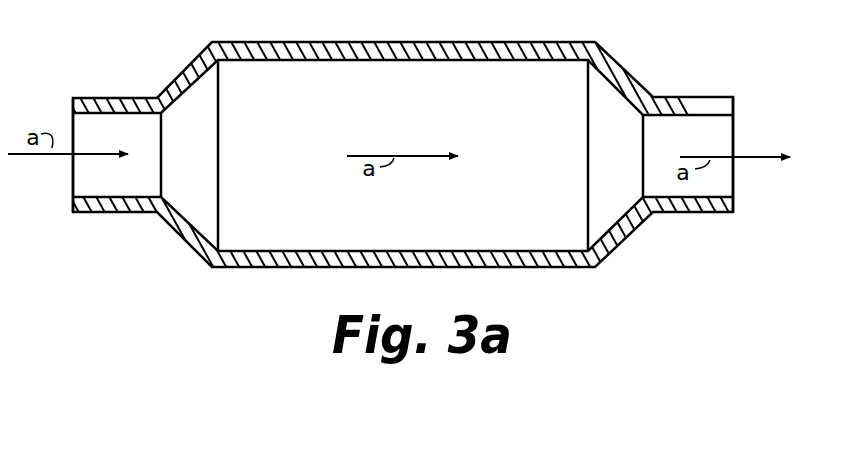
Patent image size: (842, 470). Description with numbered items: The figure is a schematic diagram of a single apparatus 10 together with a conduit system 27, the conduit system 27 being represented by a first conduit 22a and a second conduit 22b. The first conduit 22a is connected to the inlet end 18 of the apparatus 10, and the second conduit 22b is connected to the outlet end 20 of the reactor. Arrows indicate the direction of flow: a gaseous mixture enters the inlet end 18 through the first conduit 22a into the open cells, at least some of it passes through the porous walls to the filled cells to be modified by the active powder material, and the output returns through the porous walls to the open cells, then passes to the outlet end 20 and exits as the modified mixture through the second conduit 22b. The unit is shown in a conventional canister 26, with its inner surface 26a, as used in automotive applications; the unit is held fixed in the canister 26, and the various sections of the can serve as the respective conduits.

The apparatus 10 is at (425, 116).
The inlet end 18 is at (218, 165).
The outlet end 20 is at (588, 163).
The first conduit 22a is at (88, 180).
The second conduit 22b is at (717, 133).
The canister 26 is at (392, 147).
The inner surface 26a is at (452, 63).
The conduit system 27 is at (514, 40).